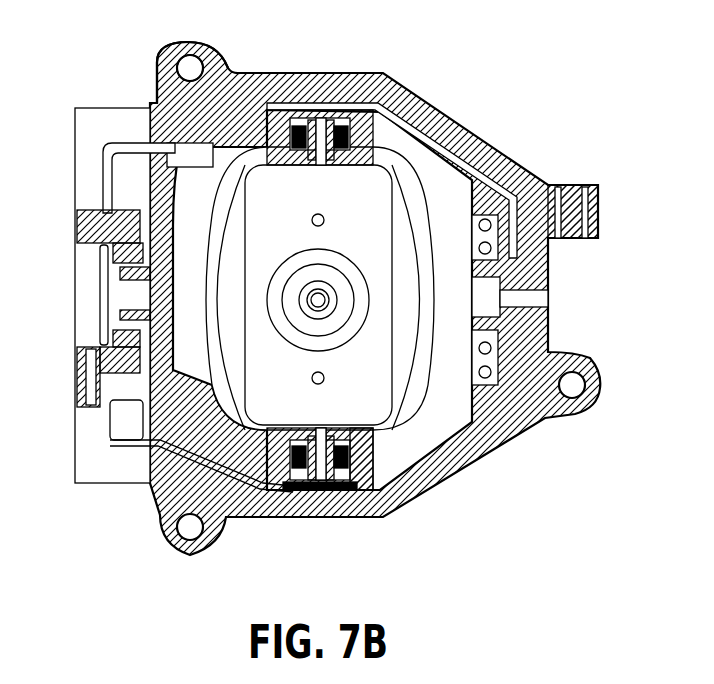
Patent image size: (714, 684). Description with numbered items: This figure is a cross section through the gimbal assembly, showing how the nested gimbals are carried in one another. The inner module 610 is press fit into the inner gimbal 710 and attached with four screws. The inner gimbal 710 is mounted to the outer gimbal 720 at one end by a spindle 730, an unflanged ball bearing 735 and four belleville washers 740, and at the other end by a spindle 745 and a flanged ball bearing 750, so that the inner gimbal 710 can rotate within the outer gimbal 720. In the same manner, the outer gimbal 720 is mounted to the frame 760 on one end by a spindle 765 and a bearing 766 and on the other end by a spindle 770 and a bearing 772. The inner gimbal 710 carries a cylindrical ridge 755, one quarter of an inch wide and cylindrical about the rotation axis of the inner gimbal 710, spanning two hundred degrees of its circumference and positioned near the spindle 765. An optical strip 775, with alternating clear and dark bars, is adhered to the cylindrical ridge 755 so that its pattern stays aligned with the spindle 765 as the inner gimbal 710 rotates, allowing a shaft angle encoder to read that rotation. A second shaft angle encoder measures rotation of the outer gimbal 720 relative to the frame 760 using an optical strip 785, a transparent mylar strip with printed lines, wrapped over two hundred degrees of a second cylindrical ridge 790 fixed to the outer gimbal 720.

The inner module 610 is at (462, 135).
The inner gimbal 710 is at (378, 198).
The outer gimbal 720 is at (484, 137).
The spindle 730 is at (330, 455).
The unflanged ball bearing 735 is at (365, 440).
The belleville washers 740 is at (295, 470).
The spindle 745 is at (318, 140).
The flanged ball bearing 750 is at (287, 147).
The cylindrical ridge 755 is at (192, 318).
The frame 760 is at (388, 86).
The spindle 765 is at (105, 298).
The bearing 766 is at (80, 236).
The spindle 770 is at (545, 312).
The bearing 772 is at (522, 272).
The optical strip 775 is at (182, 290).
The optical strip 785 is at (120, 143).
The second cylindrical ridge 790 is at (160, 150).